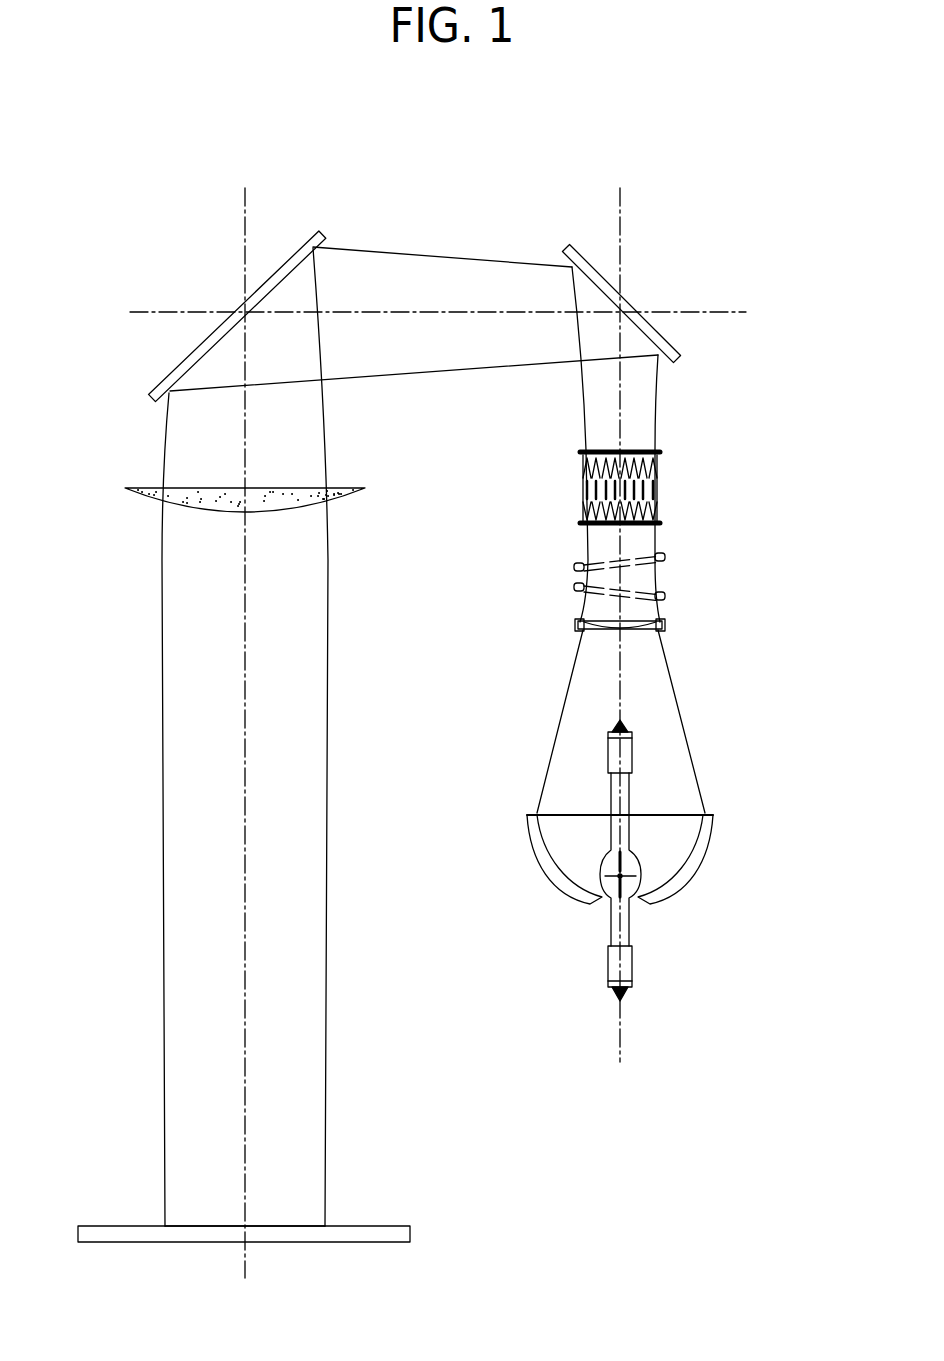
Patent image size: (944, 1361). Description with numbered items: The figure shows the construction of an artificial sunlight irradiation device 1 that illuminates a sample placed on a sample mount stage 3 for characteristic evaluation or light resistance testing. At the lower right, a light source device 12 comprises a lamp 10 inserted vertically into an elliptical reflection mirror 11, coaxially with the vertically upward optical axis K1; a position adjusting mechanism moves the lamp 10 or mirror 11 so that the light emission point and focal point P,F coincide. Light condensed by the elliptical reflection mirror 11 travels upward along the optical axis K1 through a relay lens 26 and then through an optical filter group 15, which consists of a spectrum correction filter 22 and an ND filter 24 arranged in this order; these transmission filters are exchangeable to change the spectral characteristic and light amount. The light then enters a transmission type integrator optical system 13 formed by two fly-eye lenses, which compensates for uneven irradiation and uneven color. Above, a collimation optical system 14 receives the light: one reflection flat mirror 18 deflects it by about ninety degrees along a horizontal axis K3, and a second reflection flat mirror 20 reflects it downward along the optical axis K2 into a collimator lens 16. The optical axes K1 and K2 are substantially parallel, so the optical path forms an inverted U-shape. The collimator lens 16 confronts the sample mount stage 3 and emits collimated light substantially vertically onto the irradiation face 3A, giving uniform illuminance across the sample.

The artificial sunlight irradiation device 1 is at (482, 132).
The sample mount stage 3 is at (383, 1234).
The irradiation face 3A is at (351, 1225).
The lamp 10 is at (632, 927).
The elliptical reflection mirror 11 is at (697, 861).
The light source device 12 is at (776, 853).
The transmission type integrator optical system 13 is at (754, 443).
The collimation optical system 14 is at (470, 237).
The optical filter group 15 is at (754, 549).
The collimator lens 16 is at (150, 501).
The reflection flat mirror 18 is at (668, 340).
The reflection flat mirror 20 is at (183, 353).
The spectrum correction filter 22 is at (665, 558).
The ND filter 24 is at (665, 595).
The relay lens 26 is at (666, 626).
The optical axis K1 is at (622, 611).
The optical axis K2 is at (245, 719).
The third optical axis K3 is at (457, 314).
The light emission point and focal point P,F is at (617, 888).